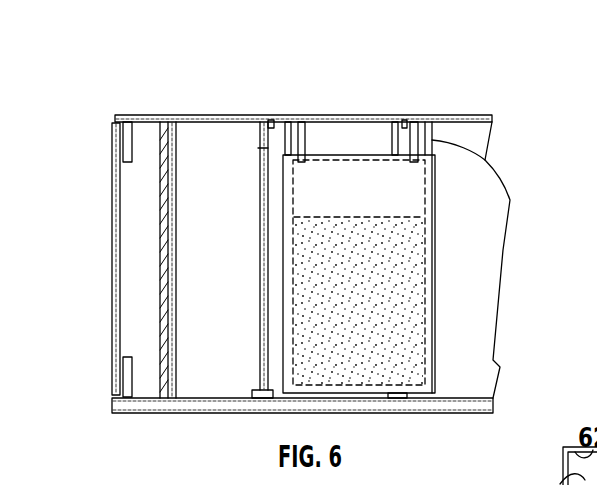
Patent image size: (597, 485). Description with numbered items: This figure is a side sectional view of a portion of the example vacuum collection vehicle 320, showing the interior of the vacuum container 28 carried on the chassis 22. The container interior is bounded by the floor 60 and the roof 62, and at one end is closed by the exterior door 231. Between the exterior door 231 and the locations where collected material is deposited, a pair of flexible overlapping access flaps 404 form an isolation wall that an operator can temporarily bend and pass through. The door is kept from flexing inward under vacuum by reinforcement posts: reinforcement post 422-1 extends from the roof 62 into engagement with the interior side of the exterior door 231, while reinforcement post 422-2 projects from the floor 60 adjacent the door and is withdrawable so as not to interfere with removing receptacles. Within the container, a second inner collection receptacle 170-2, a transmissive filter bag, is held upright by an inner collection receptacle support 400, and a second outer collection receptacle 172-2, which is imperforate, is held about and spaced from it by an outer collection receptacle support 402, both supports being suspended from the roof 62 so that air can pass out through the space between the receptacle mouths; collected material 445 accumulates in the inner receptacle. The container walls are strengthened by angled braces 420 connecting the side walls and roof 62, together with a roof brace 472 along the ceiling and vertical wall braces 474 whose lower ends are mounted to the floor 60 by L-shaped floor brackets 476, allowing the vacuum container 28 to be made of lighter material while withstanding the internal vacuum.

The vacuum collection vehicle 320 is at (92, 129).
The vacuum container 28 is at (458, 115).
The chassis 22 is at (393, 413).
The exterior door 231 is at (113, 252).
The reinforcement post 422-1 is at (132, 137).
The reinforcement post 422-2 is at (132, 386).
The access flap 404 is at (163, 247).
The roof 62 is at (200, 122).
The floor 60 is at (218, 398).
The wall brace 474 is at (260, 292).
The brace 420 is at (258, 148).
The L-shaped floor bracket 476 is at (250, 399).
The roof brace 472 is at (270, 119).
The inner collection receptacle support 400 is at (306, 138).
The outer collection receptacle support 402 is at (283, 147).
The inner collection receptacle 170-2 is at (428, 300).
The outer collection receptacle 172-2 is at (428, 365).
The collected material 445 is at (373, 287).